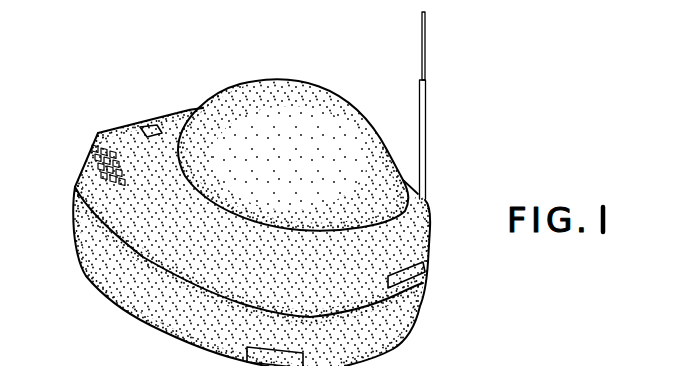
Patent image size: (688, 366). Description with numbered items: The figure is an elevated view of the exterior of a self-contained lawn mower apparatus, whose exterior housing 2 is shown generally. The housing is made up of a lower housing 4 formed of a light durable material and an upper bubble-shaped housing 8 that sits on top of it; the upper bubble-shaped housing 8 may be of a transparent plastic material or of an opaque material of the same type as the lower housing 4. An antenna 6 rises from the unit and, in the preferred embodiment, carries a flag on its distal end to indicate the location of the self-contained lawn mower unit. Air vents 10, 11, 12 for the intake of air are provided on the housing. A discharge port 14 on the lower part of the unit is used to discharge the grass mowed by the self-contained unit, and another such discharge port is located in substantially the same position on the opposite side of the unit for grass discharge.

The exterior housing 2 is at (176, 100).
The lower housing 4 is at (432, 237).
The antenna 6 is at (424, 103).
The upper bubble-shaped housing 8 is at (346, 93).
The air vent 10 is at (93, 160).
The air vent 11 is at (146, 124).
The air vent 12 is at (408, 270).
The discharge port 14 is at (268, 351).